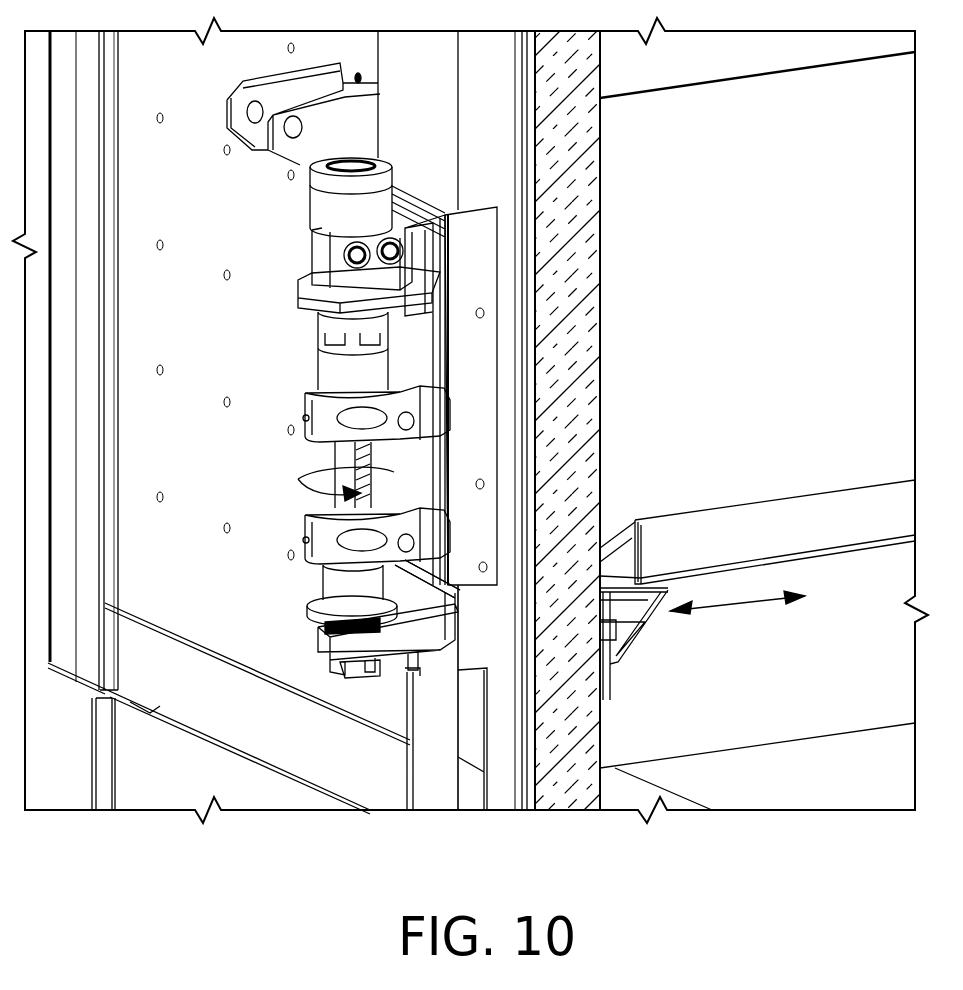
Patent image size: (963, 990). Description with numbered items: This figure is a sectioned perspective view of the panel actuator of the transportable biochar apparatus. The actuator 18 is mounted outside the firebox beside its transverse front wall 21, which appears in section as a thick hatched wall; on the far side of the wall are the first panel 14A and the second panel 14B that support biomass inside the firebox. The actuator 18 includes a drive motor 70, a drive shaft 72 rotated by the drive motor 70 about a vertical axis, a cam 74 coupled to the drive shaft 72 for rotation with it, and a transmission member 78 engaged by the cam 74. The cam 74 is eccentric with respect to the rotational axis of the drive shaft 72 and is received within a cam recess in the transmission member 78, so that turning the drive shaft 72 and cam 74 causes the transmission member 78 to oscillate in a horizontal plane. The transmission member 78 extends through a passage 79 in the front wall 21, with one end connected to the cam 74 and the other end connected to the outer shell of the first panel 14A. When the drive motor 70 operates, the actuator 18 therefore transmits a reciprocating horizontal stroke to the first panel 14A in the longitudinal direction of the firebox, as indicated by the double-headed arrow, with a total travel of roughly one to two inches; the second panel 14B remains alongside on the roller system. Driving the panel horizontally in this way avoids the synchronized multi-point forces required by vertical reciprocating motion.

The first panel 14A is at (762, 674).
The second panel 14B is at (741, 316).
The actuator 18 is at (331, 418).
The front wall 21 is at (598, 200).
The drive motor 70 is at (310, 202).
The drive shaft 72 is at (362, 476).
The cam 74 is at (330, 626).
The transmission member 78 is at (432, 633).
The passage 79 is at (450, 590).